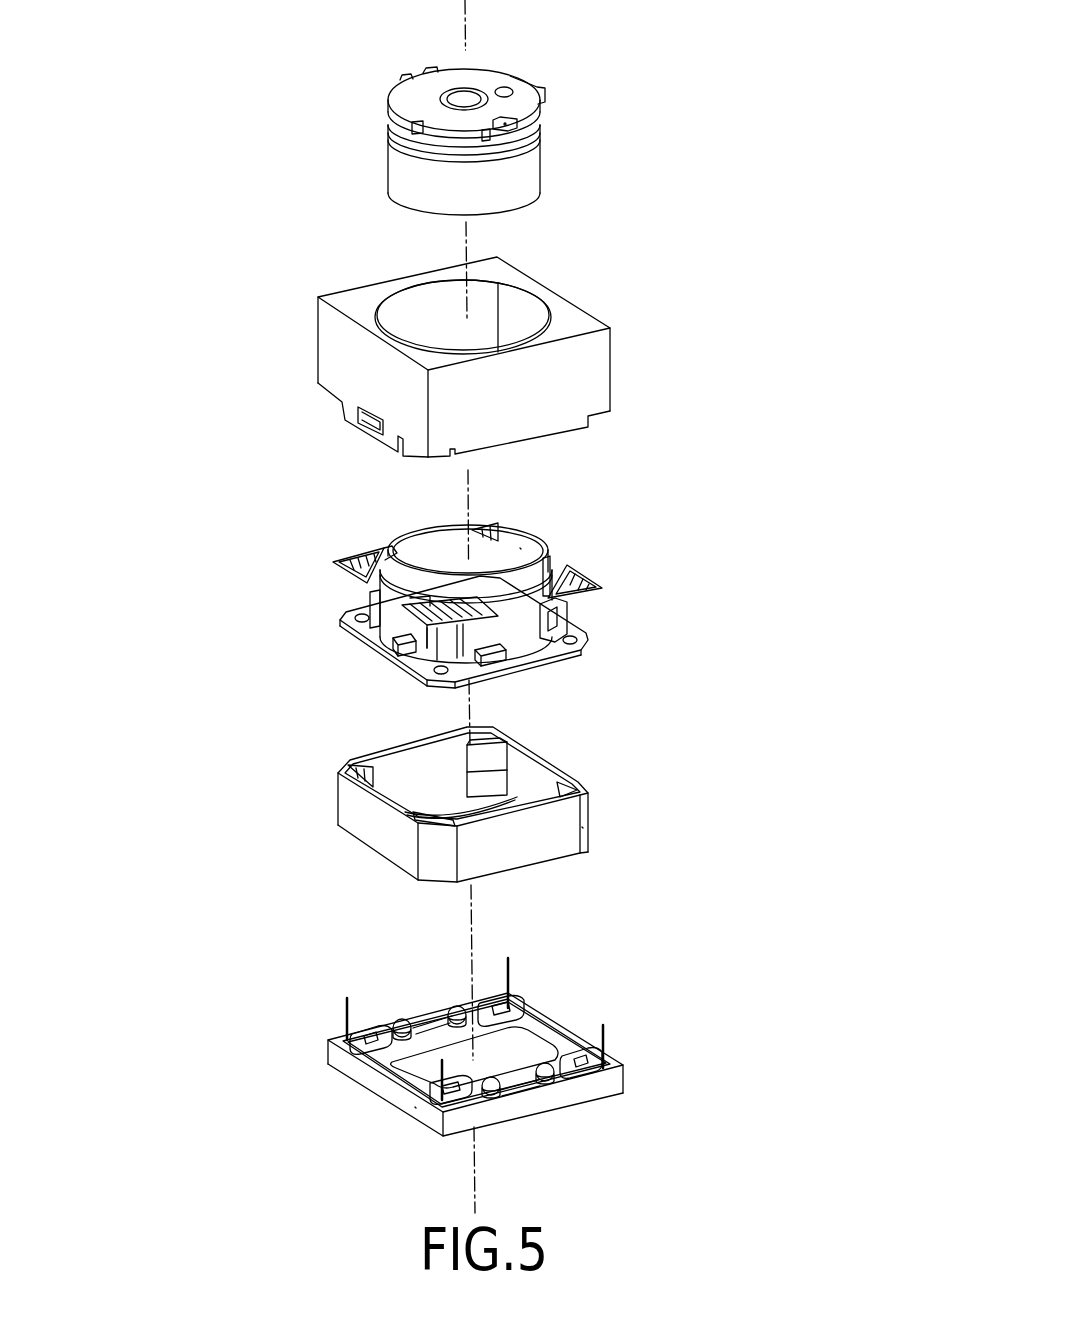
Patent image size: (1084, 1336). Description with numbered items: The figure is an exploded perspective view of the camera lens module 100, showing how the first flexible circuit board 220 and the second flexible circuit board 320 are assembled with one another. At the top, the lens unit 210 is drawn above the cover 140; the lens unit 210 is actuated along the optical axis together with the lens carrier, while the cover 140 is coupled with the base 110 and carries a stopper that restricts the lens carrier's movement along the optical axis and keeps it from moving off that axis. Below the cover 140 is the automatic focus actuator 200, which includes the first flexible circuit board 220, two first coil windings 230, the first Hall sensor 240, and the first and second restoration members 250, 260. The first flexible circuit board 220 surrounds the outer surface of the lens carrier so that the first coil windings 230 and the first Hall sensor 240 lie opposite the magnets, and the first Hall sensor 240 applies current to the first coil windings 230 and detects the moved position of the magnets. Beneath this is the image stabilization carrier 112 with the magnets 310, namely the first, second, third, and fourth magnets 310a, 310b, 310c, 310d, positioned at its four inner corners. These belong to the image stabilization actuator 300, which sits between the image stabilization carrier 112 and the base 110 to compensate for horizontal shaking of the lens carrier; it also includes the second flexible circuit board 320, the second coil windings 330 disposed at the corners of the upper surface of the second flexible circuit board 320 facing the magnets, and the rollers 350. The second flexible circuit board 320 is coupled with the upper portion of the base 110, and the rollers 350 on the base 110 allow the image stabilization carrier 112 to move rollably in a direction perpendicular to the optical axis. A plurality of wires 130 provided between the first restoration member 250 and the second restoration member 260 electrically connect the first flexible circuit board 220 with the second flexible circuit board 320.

The camera lens module 100 is at (682, 89).
The lens unit 210 is at (407, 174).
The cover 140 is at (330, 348).
The base 110 is at (520, 548).
The automatic focus actuator 200 is at (203, 545).
The first Hall sensor 240 is at (443, 638).
The first flexible circuit board 220 is at (523, 637).
The first coil windings 230 is at (408, 601).
The first restoration member 250 is at (345, 556).
The second restoration member 260 is at (395, 640).
The image stabilization actuator 300 is at (763, 1142).
The magnets 310 is at (697, 703).
The first magnet 310a is at (350, 763).
The second magnet 310b is at (572, 780).
The third magnet 310c is at (415, 822).
The fourth magnet 310d is at (497, 755).
The image stabilization carrier 112 is at (583, 827).
The second flexible circuit board 320 is at (525, 1090).
The second coil windings 330 is at (518, 1006).
The rollers 350 is at (456, 1005).
The wires 130 is at (345, 1016).